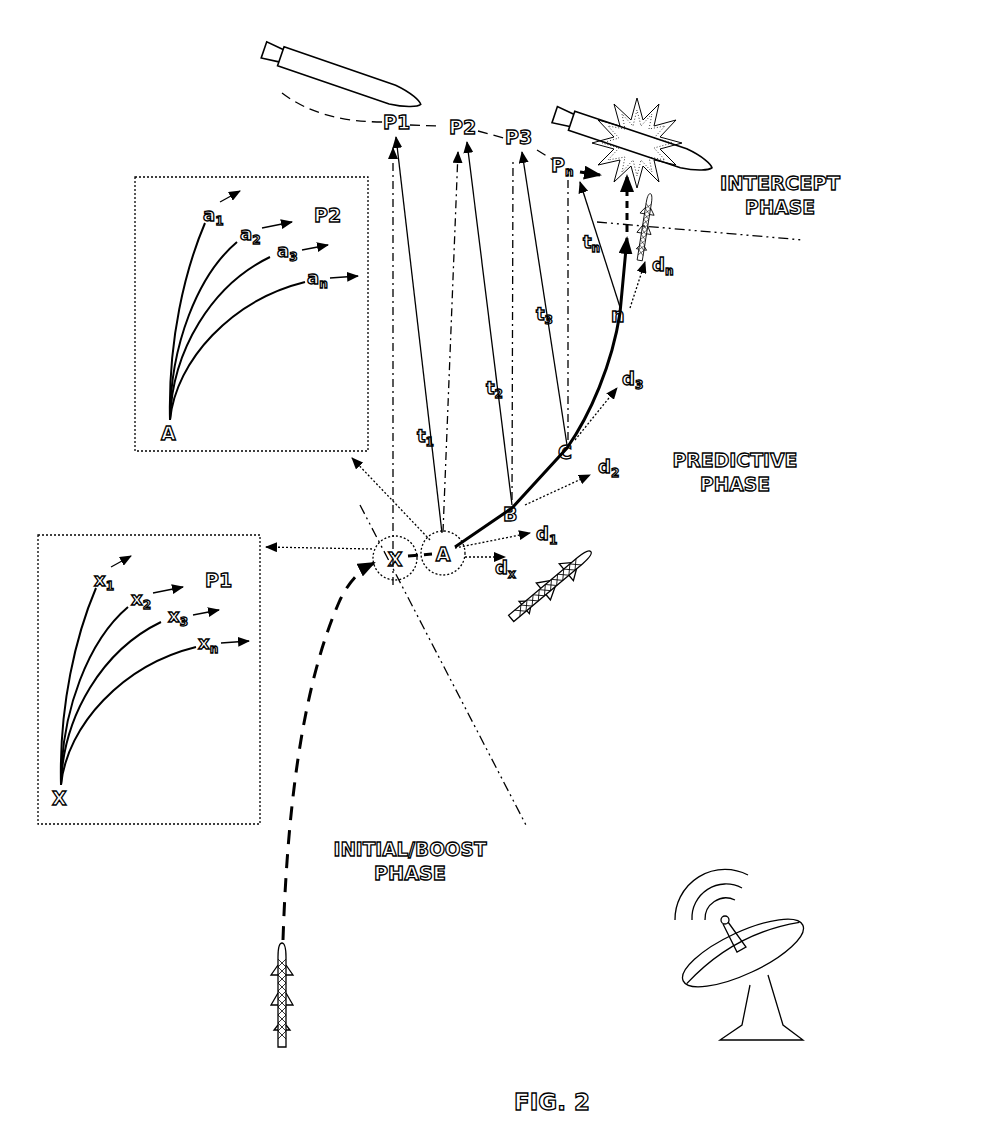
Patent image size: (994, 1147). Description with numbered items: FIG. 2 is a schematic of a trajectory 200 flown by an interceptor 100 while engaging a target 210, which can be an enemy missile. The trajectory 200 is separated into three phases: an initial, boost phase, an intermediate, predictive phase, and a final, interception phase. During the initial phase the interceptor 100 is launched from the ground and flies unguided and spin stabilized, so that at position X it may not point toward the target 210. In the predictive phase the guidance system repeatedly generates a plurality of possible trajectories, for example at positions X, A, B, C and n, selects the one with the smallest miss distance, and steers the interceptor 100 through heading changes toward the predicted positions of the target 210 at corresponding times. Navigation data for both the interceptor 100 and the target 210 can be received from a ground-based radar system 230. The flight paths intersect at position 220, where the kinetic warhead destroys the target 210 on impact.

The trajectory 200 is at (204, 41).
The target 210 is at (377, 82).
The position 220 is at (640, 147).
The interceptor 100 is at (286, 985).
The ground-based radar system 230 is at (767, 927).